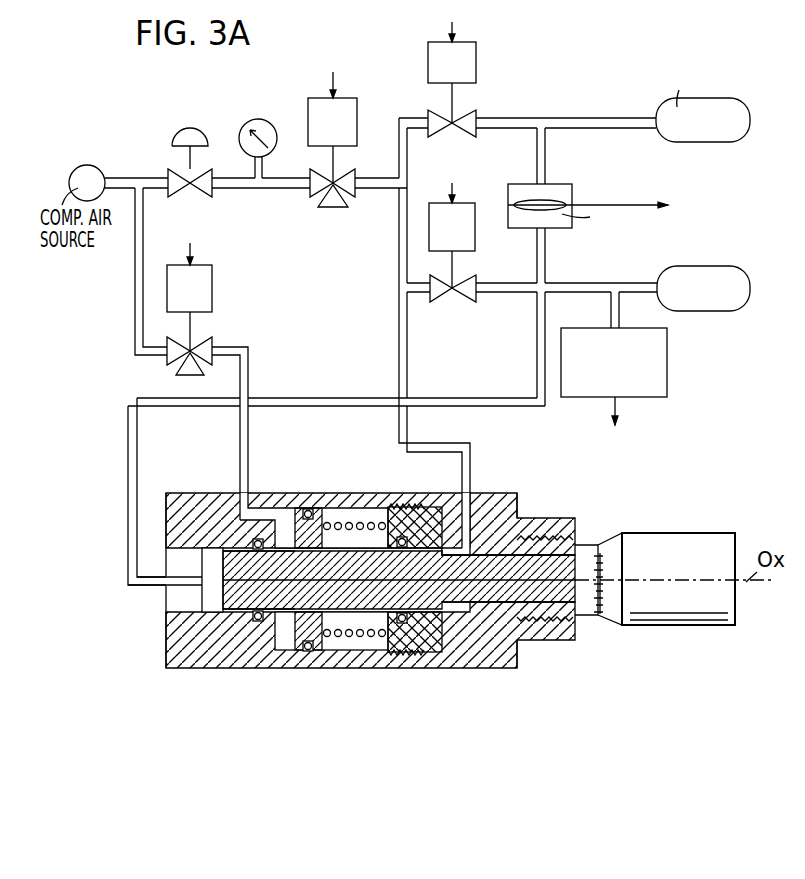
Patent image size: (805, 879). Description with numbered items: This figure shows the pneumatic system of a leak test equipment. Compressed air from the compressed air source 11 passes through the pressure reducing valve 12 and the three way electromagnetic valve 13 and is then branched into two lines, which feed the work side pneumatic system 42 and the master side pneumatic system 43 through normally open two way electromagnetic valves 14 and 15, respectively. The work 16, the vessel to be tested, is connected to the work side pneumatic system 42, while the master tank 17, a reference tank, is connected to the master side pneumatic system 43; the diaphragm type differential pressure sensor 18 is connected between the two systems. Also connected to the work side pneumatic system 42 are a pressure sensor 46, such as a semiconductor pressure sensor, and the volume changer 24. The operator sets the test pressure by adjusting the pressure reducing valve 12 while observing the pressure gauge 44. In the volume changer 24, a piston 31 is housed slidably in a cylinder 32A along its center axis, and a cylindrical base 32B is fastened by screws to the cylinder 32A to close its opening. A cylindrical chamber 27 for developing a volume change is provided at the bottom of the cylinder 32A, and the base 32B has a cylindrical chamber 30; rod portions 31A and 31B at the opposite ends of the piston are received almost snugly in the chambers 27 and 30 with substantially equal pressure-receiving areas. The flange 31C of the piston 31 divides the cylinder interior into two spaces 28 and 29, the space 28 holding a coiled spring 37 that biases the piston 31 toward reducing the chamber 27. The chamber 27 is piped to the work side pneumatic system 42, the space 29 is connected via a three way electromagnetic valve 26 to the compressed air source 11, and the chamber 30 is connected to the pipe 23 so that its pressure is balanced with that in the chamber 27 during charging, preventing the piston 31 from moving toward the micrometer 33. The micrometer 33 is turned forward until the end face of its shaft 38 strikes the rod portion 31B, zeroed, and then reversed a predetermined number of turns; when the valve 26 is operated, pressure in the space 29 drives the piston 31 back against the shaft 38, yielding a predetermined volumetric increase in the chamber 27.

The compressed air source 11 is at (97, 165).
The pressure reducing valve 12 is at (193, 128).
The three way electromagnetic valve 13 is at (346, 97).
The normally open two way electromagnetic valve 14 is at (477, 208).
The normally open two way electromagnetic valve 15 is at (471, 42).
The work 16 is at (719, 267).
The master tank 17 is at (717, 98).
The diaphragm type differential pressure sensor 18 is at (568, 183).
The pipe 23 is at (409, 157).
The volume changer 24 is at (492, 670).
The three way electromagnetic valve 26 is at (214, 270).
The cylindrical chamber 27 is at (208, 594).
The space 28 is at (386, 498).
The space 29 is at (282, 528).
The cylindrical chamber 30 is at (452, 550).
The piston 31 is at (292, 592).
The rod portion 31A is at (241, 600).
The rod portion 31B is at (430, 600).
The flange 31C is at (317, 526).
The cylinder 32A is at (292, 498).
The cylindrical base 32B is at (499, 499).
The micrometer 33 is at (703, 533).
The coiled spring 37 is at (344, 638).
The shaft 38 is at (503, 590).
The work side pneumatic system 42 is at (574, 285).
The master side pneumatic system 43 is at (519, 118).
The pressure gauge 44 is at (266, 120).
The pressure sensor 46 is at (670, 342).